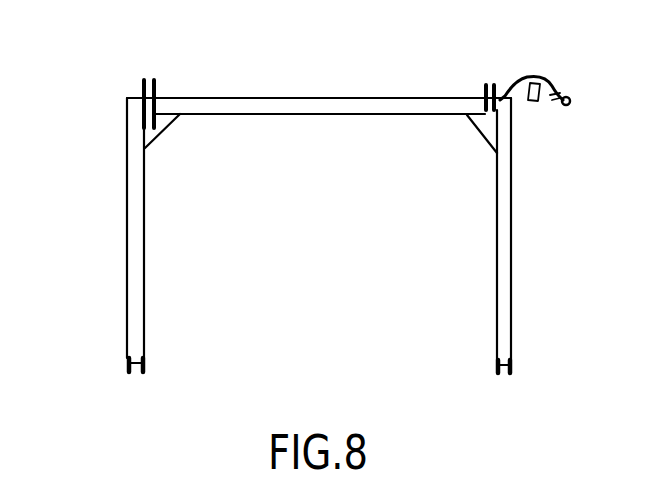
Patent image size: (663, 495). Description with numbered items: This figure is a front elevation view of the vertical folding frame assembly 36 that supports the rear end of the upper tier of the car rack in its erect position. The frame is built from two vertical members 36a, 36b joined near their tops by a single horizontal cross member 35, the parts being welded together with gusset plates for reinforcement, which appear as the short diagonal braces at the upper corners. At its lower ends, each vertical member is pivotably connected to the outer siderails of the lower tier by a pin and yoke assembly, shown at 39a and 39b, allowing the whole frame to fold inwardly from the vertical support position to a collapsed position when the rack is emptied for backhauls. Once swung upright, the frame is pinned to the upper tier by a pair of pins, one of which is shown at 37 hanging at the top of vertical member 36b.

The horizontal cross member 35 is at (307, 102).
The vertical folding frame assembly 36 is at (337, 245).
The vertical member 36a is at (128, 222).
The vertical member 36b is at (512, 233).
The pin 37 is at (540, 76).
The pin and yoke assembly 39a is at (127, 367).
The pin and yoke assembly 39b is at (513, 368).